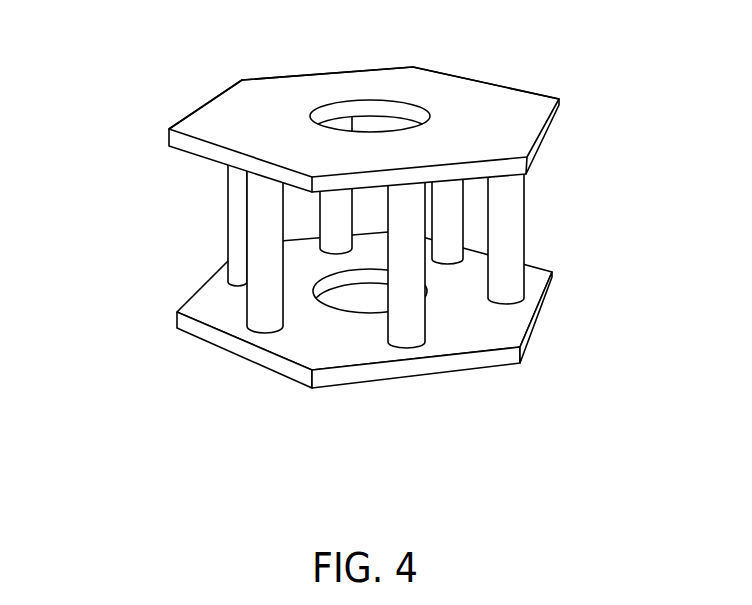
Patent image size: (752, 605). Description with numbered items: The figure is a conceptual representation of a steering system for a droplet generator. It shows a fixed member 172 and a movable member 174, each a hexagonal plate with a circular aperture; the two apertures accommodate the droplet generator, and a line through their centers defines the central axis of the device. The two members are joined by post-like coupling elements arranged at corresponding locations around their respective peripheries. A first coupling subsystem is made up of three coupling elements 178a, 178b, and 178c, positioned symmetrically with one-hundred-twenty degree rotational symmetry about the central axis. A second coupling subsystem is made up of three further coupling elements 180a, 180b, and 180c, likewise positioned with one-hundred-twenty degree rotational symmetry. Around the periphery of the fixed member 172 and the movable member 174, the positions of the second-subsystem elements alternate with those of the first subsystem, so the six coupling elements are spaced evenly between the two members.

The fixed member 172 is at (503, 99).
The movable member 174 is at (528, 346).
The coupling element 178a is at (433, 292).
The coupling element 178b is at (463, 200).
The coupling element 178c is at (218, 194).
The coupling element 180a is at (528, 245).
The coupling element 180b is at (323, 225).
The coupling element 180c is at (265, 280).